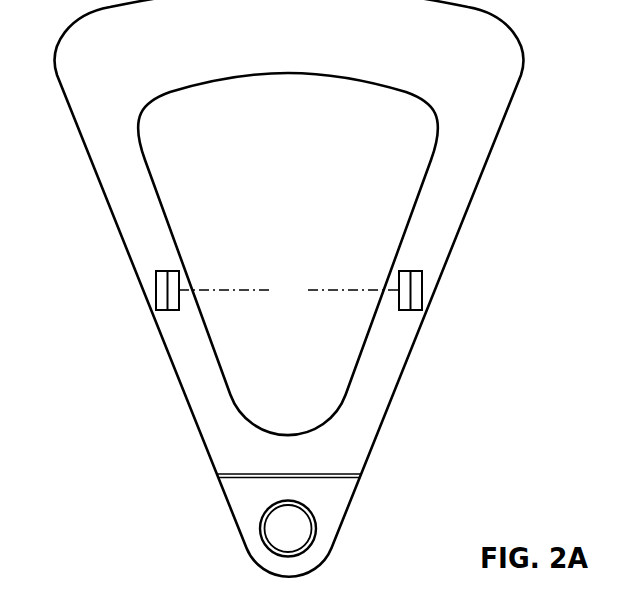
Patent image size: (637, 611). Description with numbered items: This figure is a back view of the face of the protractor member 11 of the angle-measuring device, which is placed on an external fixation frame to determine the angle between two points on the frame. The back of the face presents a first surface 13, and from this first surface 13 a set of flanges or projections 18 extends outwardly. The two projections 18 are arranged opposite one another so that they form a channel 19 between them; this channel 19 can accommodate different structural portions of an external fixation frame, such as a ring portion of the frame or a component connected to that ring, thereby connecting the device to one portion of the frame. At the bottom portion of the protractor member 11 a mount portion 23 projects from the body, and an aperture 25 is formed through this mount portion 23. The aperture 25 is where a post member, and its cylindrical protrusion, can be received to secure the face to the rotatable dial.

The protractor member 11 is at (450, 228).
The first surface 13 is at (90, 124).
The flanges or projections 18 is at (163, 290).
The channel 19 is at (289, 290).
The mount portion 23 is at (328, 527).
The aperture 25 is at (297, 536).